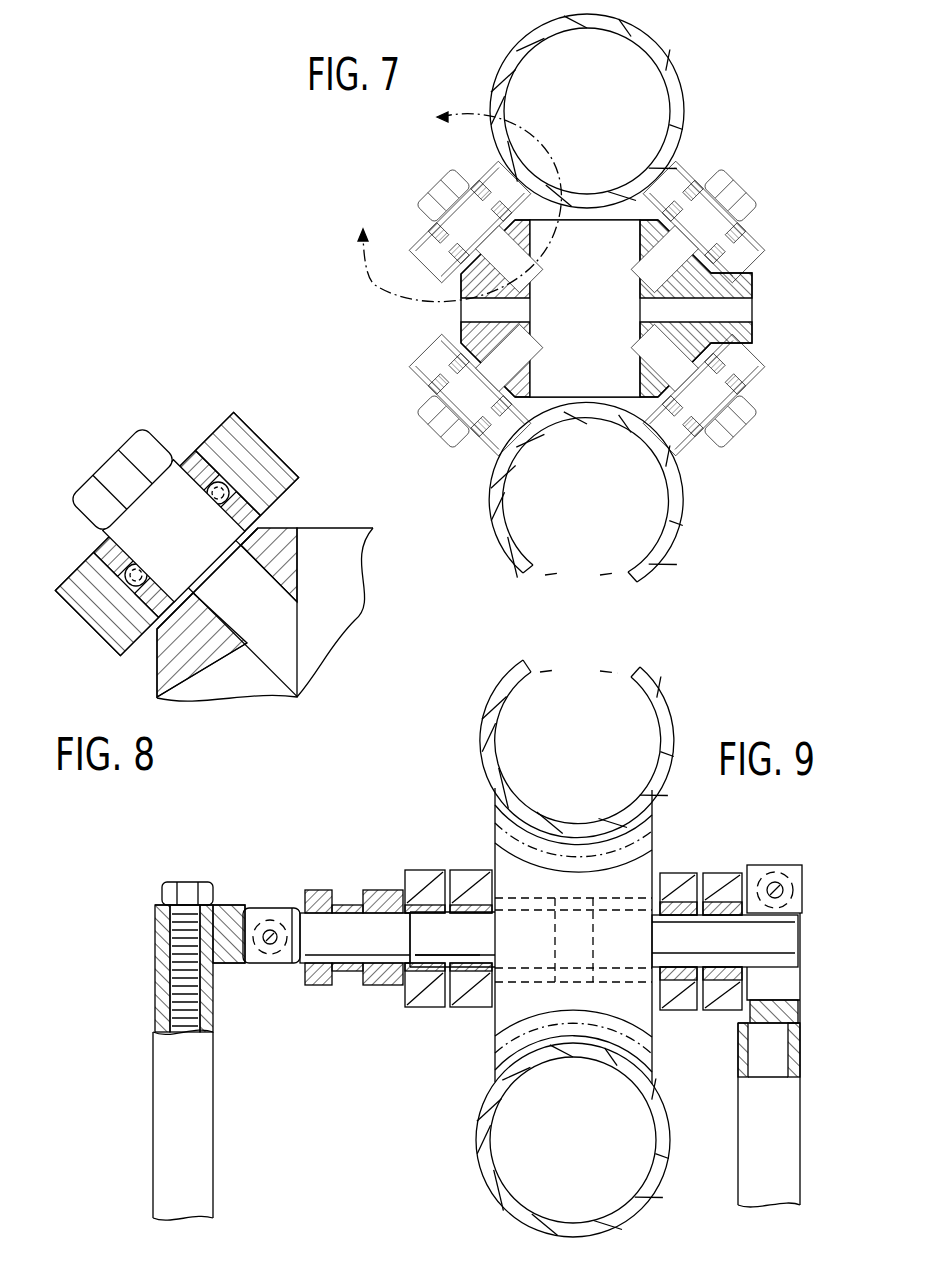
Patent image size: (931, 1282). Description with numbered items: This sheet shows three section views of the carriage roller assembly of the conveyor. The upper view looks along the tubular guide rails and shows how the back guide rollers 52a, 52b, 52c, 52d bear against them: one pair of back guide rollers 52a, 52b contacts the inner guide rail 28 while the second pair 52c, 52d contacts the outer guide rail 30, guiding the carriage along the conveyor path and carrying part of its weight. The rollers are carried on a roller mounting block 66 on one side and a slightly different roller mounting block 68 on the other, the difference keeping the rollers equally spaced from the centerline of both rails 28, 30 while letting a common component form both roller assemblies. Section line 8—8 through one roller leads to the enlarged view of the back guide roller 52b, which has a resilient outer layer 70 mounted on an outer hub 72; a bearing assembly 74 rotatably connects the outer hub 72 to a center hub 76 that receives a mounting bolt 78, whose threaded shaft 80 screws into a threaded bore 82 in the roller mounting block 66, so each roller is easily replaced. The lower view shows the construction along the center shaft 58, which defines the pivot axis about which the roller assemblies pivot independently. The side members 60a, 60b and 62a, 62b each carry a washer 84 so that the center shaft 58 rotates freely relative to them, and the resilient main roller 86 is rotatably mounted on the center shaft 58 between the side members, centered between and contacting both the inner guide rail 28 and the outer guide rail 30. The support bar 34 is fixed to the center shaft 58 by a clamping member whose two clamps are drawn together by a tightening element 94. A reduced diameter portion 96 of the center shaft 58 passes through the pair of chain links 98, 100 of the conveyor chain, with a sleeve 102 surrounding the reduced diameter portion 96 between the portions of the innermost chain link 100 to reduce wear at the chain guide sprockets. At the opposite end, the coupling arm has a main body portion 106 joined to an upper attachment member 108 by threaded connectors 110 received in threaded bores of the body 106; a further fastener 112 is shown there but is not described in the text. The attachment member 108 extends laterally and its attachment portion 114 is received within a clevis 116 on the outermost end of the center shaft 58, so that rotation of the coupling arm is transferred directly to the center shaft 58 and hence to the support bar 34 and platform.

In FIG. 7, the section line 8 is at (457, 204).
In FIG. 7, the inner guide rail 28 is at (660, 56).
In FIG. 9, the inner guide rail 28 is at (663, 711).
In FIG. 7, the outer guide rail 30 is at (677, 512).
In FIG. 9, the outer guide rail 30 is at (660, 1114).
In FIG. 9, the support bar 34 is at (786, 1078).
In FIG. 7, the back guide roller 52a is at (683, 182).
In FIG. 7, the back guide roller 52b is at (423, 246).
In FIG. 8, the back guide roller 52b is at (243, 412).
In FIG. 7, the back guide roller 52c is at (742, 367).
In FIG. 7, the back guide roller 52d is at (435, 360).
In FIG. 9, the center shaft 58 is at (787, 943).
In FIG. 9, the first side member 60a is at (478, 870).
In FIG. 9, the first side member 60b is at (676, 878).
In FIG. 9, the second side member 62a is at (718, 878).
In FIG. 9, the second side member 62b is at (437, 870).
In FIG. 7, the roller mounting block 66 is at (462, 292).
In FIG. 8, the roller mounting block 66 is at (197, 690).
In FIG. 7, the roller mounting block 68 is at (732, 305).
In FIG. 8, the resilient outer layer 70 is at (260, 450).
In FIG. 8, the outer hub 72 is at (83, 565).
In FIG. 8, the bearing assembly 74 is at (195, 463).
In FIG. 8, the center hub 76 is at (238, 530).
In FIG. 8, the mounting bolt 78 is at (108, 467).
In FIG. 8, the threaded shaft 80 is at (273, 600).
In FIG. 8, the threaded bore 82 is at (285, 694).
In FIG. 9, the washer 84 is at (420, 1005).
In FIG. 9, the main roller 86 is at (645, 827).
In FIG. 9, the tightening element 94 is at (773, 883).
In FIG. 9, the reduced diameter portion 96 is at (317, 953).
In FIG. 9, the chain link 98 is at (316, 890).
In FIG. 9, the innermost chain link 100 is at (367, 892).
In FIG. 9, the sleeve 102 is at (348, 976).
In FIG. 9, the main body portion 106 is at (165, 1136).
In FIG. 9, the upper attachment member 108 is at (160, 928).
In FIG. 9, the connector 110 is at (183, 884).
In FIG. 9, the bolt 112 is at (193, 1023).
In FIG. 9, the attachment portion 114 is at (267, 906).
In FIG. 9, the clevis 116 is at (270, 953).